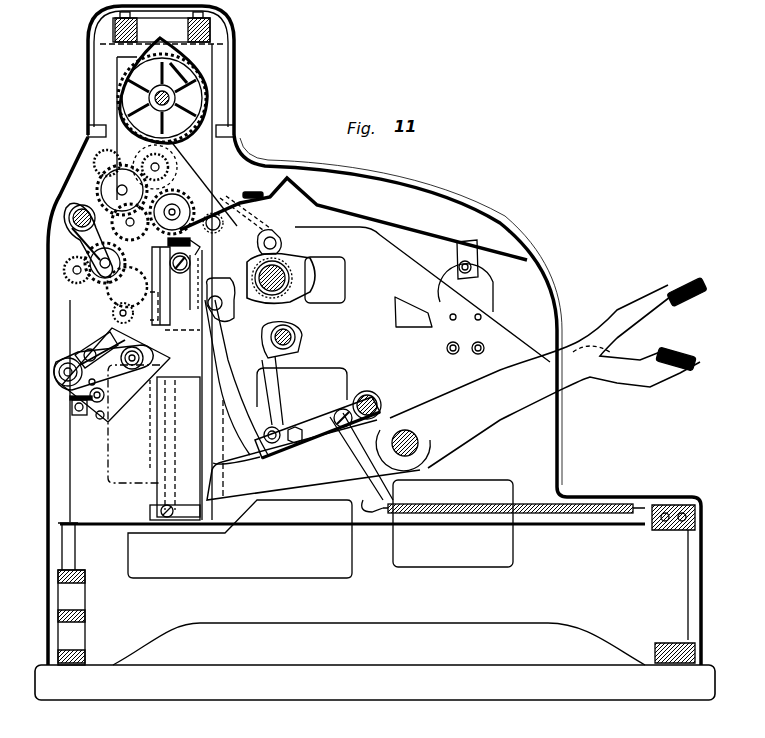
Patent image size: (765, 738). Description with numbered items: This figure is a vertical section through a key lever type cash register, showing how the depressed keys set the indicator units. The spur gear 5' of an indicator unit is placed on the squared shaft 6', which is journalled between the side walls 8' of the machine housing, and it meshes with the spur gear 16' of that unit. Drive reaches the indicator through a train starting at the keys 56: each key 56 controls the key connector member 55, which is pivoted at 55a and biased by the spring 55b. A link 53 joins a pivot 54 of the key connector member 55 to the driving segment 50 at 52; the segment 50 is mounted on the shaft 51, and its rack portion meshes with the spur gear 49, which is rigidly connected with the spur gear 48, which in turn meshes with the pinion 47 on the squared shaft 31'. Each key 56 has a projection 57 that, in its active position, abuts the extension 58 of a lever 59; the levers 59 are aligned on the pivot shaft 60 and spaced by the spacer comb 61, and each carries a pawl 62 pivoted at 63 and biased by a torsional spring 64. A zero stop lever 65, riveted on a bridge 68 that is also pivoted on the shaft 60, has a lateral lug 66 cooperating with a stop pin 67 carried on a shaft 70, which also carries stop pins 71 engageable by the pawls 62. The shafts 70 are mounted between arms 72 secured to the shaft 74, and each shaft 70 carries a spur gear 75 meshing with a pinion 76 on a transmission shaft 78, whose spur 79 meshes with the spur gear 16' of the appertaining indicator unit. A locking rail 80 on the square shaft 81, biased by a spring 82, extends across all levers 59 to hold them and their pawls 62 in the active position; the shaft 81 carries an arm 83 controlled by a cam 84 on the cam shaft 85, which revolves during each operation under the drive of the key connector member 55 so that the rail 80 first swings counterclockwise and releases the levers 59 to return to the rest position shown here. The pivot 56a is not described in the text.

The side wall 8' is at (193, 90).
The spur gear 5' is at (192, 98).
The shaft 6' is at (208, 102).
The spur gear 16' is at (212, 154).
The pinion 47 is at (178, 168).
The squared shaft 31' is at (199, 195).
The driving segment 50 is at (282, 162).
The spur gear 48 is at (100, 183).
The spur gear 49 is at (97, 187).
The shaft 74 is at (67, 212).
The arm 72 is at (83, 228).
The spur gear 75 is at (77, 243).
The lateral lug 66 is at (80, 257).
The stop pin 67 is at (90, 263).
The shaft 70 is at (102, 283).
The stop pin 71 is at (113, 287).
The zero stop lever 65 is at (80, 300).
The pivot 63 is at (115, 310).
The shaft 51 is at (263, 202).
The joint 52 is at (280, 237).
The link 53 is at (247, 323).
The cam shaft 85 is at (292, 334).
The spur 79 is at (172, 262).
The pawl 62 is at (170, 276).
The pinion 76 is at (176, 234).
The transmission shaft 78 is at (190, 238).
The locking rail 80 is at (160, 325).
The pivot shaft 60 is at (57, 378).
The lever 59 is at (83, 323).
The spring 64 is at (90, 350).
The bridge 68 is at (77, 337).
The square shaft 81 is at (124, 364).
The spring 82 is at (87, 363).
The spacer comb 61 is at (72, 398).
The arm 83 is at (157, 410).
The extension 58 is at (177, 467).
The projection 57 is at (182, 467).
The key connector member 55 is at (327, 402).
The cam 84 is at (272, 428).
The pivot 54 is at (282, 425).
The pivot 55a is at (370, 396).
The spring 55b is at (543, 513).
The key 56 is at (288, 490).
The pivot 56a is at (415, 450).